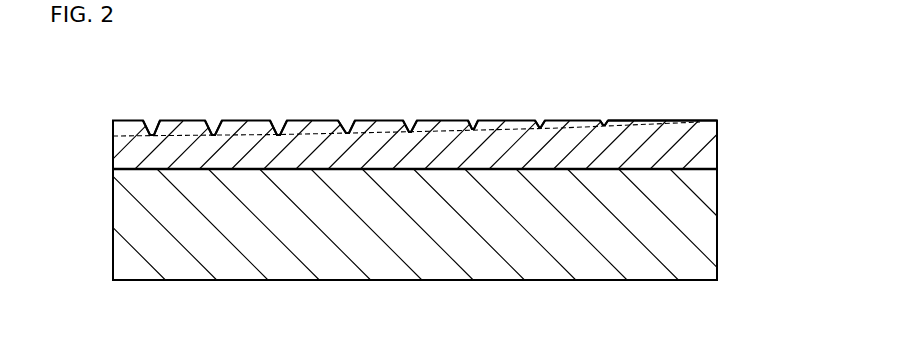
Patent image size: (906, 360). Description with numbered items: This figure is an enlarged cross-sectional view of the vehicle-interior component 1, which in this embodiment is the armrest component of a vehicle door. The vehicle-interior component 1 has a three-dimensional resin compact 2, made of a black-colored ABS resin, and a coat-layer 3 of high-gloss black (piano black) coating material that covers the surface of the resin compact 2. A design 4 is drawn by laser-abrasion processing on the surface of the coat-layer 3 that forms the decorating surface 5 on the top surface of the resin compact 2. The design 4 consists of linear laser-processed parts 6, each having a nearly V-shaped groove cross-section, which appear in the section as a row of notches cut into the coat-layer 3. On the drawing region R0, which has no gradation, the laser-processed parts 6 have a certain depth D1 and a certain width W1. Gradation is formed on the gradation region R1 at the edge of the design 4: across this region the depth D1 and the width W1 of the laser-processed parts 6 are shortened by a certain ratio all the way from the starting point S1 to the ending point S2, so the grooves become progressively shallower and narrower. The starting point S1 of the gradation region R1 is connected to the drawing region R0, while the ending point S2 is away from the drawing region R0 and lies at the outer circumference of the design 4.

The vehicle-interior component 1 is at (111, 74).
The resin compact 2 is at (717, 208).
The coat-layer 3 is at (717, 139).
The design 4 is at (281, 120).
The decorating surface 5 is at (580, 115).
The laser-processed part 6 is at (220, 120).
The drawing region R0 is at (312, 57).
The gradation region R1 is at (710, 57).
The starting point S1 is at (312, 116).
The ending point S2 is at (716, 108).
The width W1 is at (127, 97).
The depth D1 is at (88, 103).